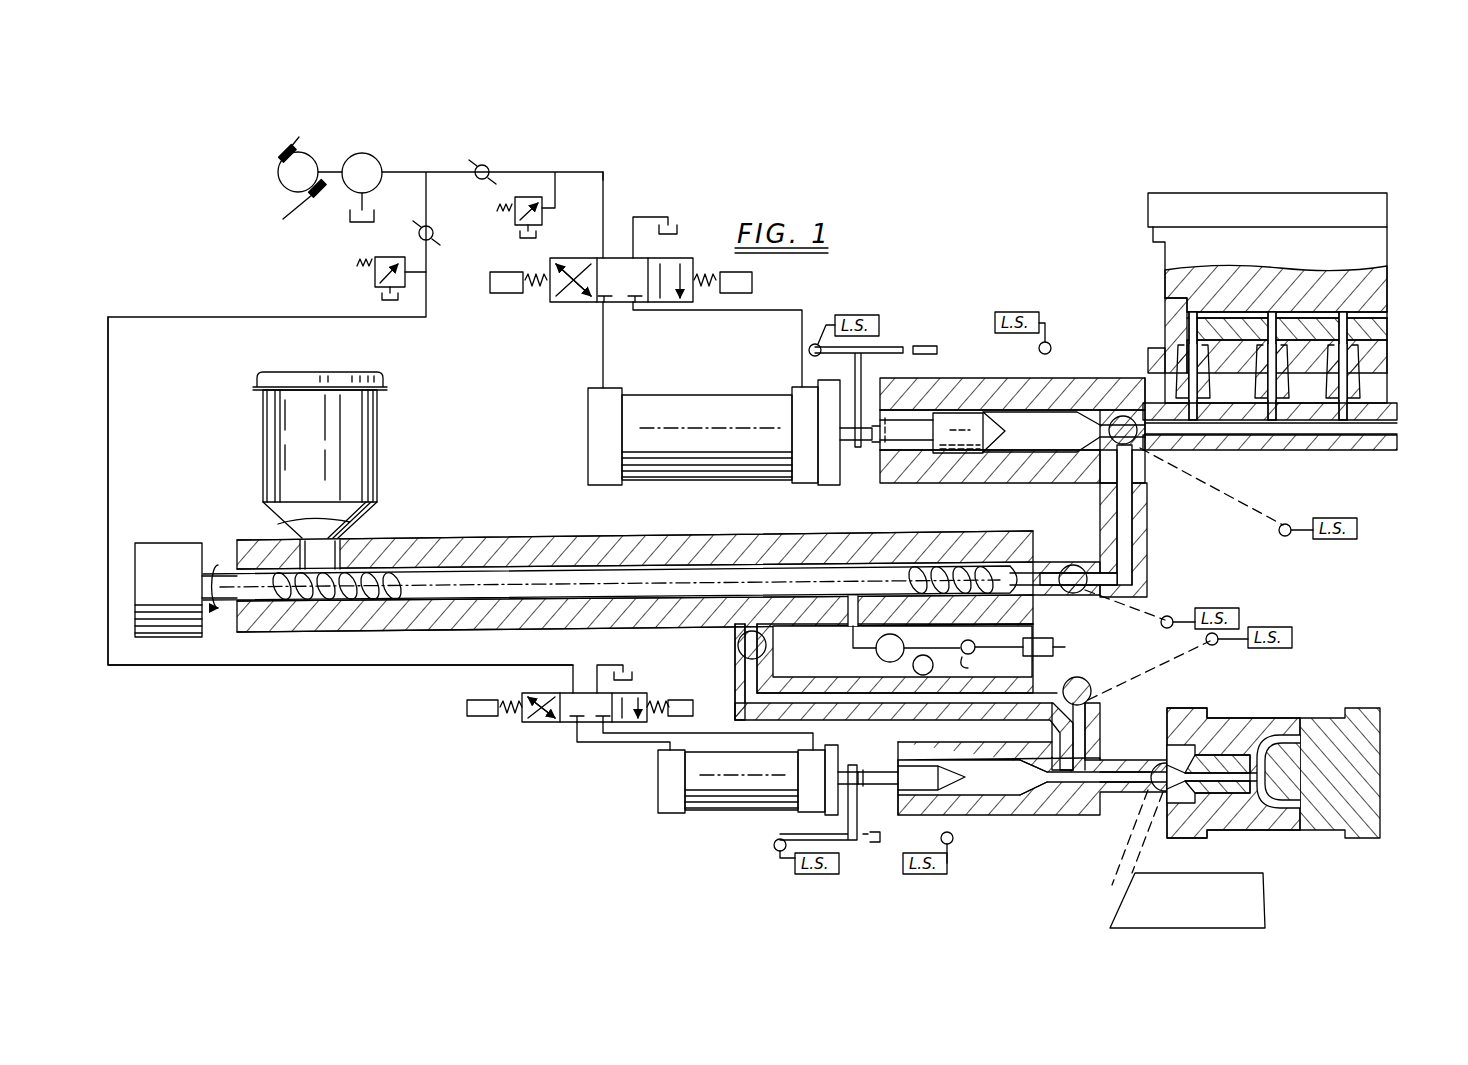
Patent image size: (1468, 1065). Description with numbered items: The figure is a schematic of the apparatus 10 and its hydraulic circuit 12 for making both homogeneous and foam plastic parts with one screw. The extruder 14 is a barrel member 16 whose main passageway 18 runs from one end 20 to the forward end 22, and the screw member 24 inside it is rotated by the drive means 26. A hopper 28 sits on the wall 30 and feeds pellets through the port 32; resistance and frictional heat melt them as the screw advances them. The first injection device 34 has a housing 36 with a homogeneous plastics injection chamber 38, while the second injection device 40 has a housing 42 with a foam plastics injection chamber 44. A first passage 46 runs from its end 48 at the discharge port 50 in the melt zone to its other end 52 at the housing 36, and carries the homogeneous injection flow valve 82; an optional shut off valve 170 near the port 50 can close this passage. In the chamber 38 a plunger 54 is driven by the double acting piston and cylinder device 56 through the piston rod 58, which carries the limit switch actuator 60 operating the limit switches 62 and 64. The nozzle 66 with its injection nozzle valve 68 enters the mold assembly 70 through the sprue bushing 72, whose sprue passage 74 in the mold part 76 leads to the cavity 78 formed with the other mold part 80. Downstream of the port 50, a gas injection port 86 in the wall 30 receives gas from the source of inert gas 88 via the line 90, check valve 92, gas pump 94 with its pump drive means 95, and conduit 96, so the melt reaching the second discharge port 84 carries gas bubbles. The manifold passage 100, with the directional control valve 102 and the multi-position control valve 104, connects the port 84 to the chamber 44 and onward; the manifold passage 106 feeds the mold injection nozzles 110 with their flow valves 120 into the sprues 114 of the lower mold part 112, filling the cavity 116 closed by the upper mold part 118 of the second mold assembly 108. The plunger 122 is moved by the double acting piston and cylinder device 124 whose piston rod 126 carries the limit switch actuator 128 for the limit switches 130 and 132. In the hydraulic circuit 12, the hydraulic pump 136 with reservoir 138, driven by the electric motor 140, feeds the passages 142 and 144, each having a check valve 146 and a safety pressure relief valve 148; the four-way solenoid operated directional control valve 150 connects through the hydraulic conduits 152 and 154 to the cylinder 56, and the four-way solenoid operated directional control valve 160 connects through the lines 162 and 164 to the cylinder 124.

The apparatus 10 is at (415, 775).
The hydraulic circuit 12 is at (232, 306).
The extruder 14 is at (320, 640).
The barrel member 16 is at (368, 633).
The main passageway 18 is at (458, 550).
The end of barrel member 20 is at (250, 636).
The forward end 22 is at (1005, 528).
The screw member 24 is at (370, 575).
The drive means 26 is at (167, 553).
The hopper 28 is at (367, 452).
The wall 30 is at (413, 540).
The port 32 is at (300, 545).
The first injection device 34 is at (1070, 818).
The housing 36 is at (975, 816).
The homogeneous plastics injection chamber 38 is at (1000, 800).
The second injection device 40 is at (1048, 377).
The housing 42 is at (1085, 387).
The foam plastics injection chamber 44 is at (1052, 446).
The first passage 46 is at (808, 690).
The end of first passage 48 is at (737, 640).
The discharge port 50 is at (748, 600).
The other end of first passage 52 is at (1101, 722).
The plunger 54 is at (898, 754).
The double acting fluid responsive piston and cylinder device 56 is at (727, 802).
The piston rod 58 is at (874, 781).
The limit switch actuator 60 is at (858, 846).
The limit switch 62 is at (812, 875).
The limit switch 64 is at (928, 874).
The nozzle 66 is at (1138, 792).
The injection nozzle valve 68 is at (1160, 765).
The mold assembly 70 is at (1385, 818).
The sprue bushing 72 is at (1212, 752).
The sprue passage 74 is at (1235, 768).
The mold part 76 is at (1227, 826).
The cavity 78 is at (1282, 826).
The other mold part 80 is at (1375, 755).
The homogeneous injection flow valve 82 is at (1095, 697).
The second discharge port 84 is at (1007, 583).
The gas injection port 86 is at (850, 625).
The source of inert gas 88 is at (1064, 647).
The line 90 is at (992, 637).
The check valve 92 is at (982, 663).
The gas pump 94 is at (905, 646).
The pump drive means 95 is at (913, 668).
The conduit 96 is at (879, 665).
The manifold passage 100 is at (1148, 530).
The directional control valve 102 is at (1074, 563).
The multi-position control valve 104 is at (1140, 452).
The manifold passage 106 is at (1287, 442).
The second mold assembly 108 is at (1143, 242).
The mold injection nozzles 110 is at (1185, 372).
The lower mold part 112 is at (1385, 316).
The sprues 114 is at (1190, 335).
The cavity 116 is at (1385, 298).
The upper mold part 118 is at (1375, 260).
The flow valves 120 is at (1387, 340).
The plunger 122 is at (962, 457).
The double acting piston and cylinder device 124 is at (757, 468).
The piston rod 126 is at (877, 455).
The limit switch actuator 128 is at (865, 369).
The limit switch 130 is at (858, 314).
The limit switch 132 is at (1017, 311).
The hydraulic pump 136 is at (381, 146).
The reservoir 138 is at (355, 224).
The electric motor 140 is at (278, 178).
The passage 142 is at (280, 320).
The passage 144 is at (605, 186).
The check valve 146 is at (477, 167).
The safety pressure relief valve 148 is at (373, 279).
The four-way solenoid operated directional control valve 150 is at (550, 741).
The hydraulic conduit 152 is at (615, 746).
The hydraulic conduit 154 is at (700, 732).
The four-way solenoid operated directional control valve 160 is at (583, 306).
The line 162 is at (604, 345).
The line 164 is at (715, 312).
The shut off valve 170 is at (740, 654).